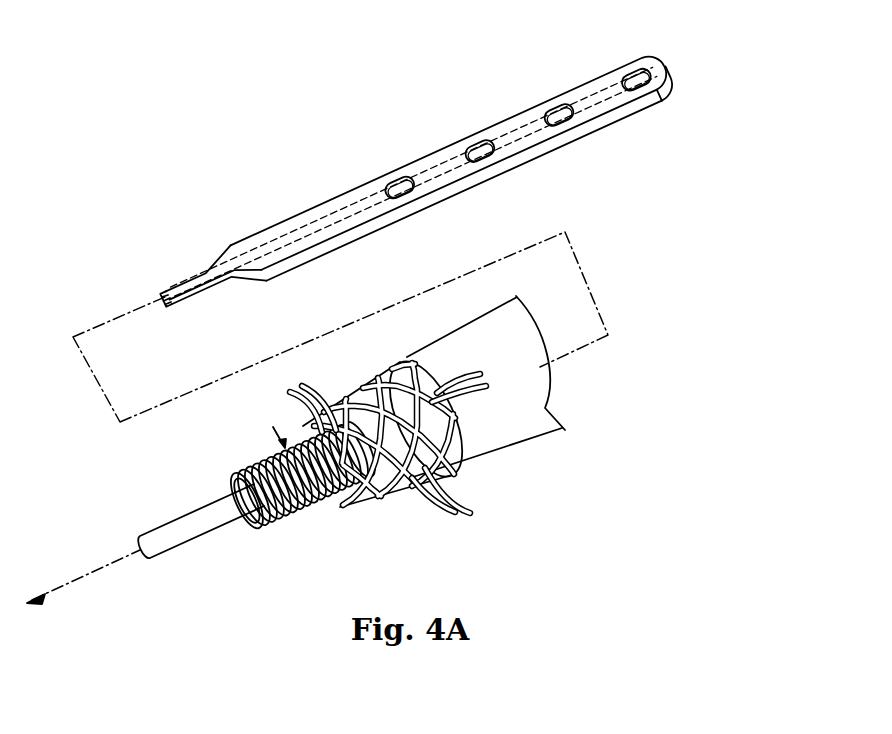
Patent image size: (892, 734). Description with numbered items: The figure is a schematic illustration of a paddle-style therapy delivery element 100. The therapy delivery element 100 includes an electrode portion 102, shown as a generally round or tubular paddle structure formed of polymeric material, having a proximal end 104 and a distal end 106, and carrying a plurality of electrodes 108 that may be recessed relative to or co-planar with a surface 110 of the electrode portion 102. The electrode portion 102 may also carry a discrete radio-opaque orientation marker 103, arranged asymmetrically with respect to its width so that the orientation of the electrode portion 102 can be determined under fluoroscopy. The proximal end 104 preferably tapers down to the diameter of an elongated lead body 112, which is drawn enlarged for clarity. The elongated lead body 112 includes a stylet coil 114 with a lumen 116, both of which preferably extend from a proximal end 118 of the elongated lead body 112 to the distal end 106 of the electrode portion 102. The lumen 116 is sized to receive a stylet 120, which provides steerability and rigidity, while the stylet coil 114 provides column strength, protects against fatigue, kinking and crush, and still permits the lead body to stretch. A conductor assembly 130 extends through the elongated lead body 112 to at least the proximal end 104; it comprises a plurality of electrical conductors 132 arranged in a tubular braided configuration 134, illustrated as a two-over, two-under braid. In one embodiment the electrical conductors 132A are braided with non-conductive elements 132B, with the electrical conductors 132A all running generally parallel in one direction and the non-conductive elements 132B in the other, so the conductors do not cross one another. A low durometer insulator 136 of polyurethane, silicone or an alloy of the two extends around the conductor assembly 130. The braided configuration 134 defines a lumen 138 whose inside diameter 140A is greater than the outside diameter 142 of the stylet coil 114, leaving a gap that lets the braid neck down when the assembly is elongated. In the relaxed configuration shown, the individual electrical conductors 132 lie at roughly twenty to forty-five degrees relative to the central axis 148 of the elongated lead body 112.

The therapy delivery element 100 is at (525, 226).
The electrode portion 102 is at (280, 222).
The radio-opaque marker 103 is at (617, 98).
The proximal end 104 is at (218, 265).
The distal end 106 is at (672, 70).
The electrodes 108 is at (463, 145).
The surface 110 is at (355, 230).
The elongated lead body 112 is at (193, 297).
The stylet coil 114 is at (516, 135).
The lumen 116 is at (244, 530).
The proximal end 118 is at (226, 478).
The stylet 120 is at (183, 540).
The conductor assembly 130 is at (331, 396).
The electrical conductors 132 is at (295, 392).
The electrical conductors 132A is at (470, 513).
The non-conductive elements 132B is at (447, 388).
The braided configuration 134 is at (372, 388).
The insulator 136 is at (170, 288).
The lumen 138 is at (350, 503).
The inside diameter 140A is at (384, 502).
The outside diameter 142 is at (313, 505).
The central axis 148 is at (104, 563).